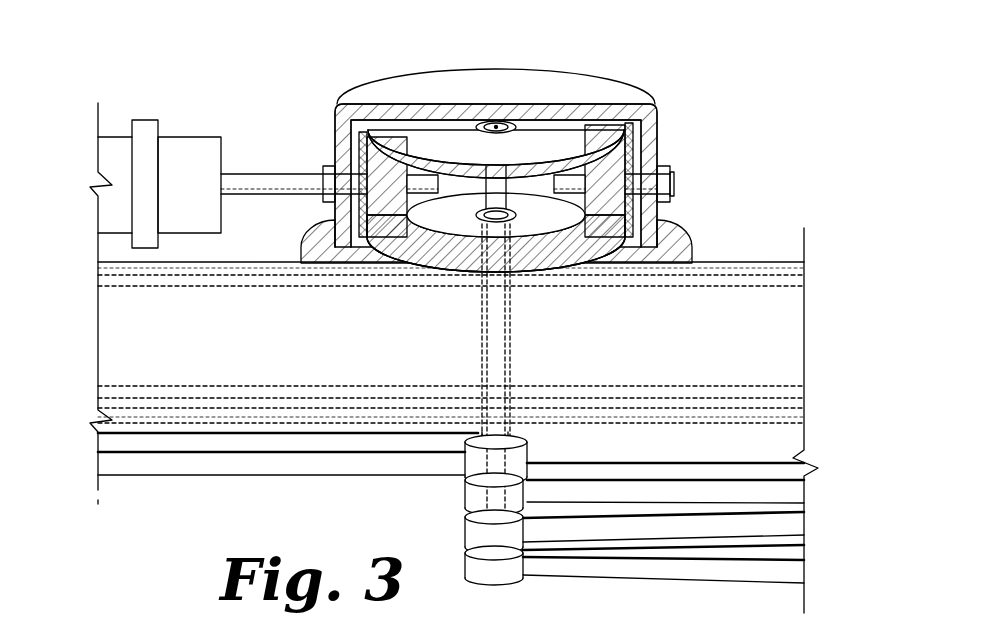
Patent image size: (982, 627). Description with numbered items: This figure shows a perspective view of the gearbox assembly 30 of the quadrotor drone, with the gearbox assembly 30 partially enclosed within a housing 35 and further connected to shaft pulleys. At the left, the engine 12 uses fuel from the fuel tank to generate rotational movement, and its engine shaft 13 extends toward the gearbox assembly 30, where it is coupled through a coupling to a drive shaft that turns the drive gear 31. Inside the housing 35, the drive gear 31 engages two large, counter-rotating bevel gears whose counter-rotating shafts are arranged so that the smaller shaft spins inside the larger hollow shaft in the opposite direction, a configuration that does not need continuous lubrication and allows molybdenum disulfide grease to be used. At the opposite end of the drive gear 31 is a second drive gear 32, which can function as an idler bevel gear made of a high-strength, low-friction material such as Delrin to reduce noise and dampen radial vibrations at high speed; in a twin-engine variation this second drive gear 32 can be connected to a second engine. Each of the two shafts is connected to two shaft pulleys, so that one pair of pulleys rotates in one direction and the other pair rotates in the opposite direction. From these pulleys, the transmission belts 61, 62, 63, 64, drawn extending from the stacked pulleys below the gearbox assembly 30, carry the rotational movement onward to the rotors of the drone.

The engine 12 is at (193, 163).
The engine shaft 13 is at (258, 182).
The gearbox assembly 30 is at (561, 275).
The drive gear 31 is at (387, 175).
The second drive gear 32 is at (610, 170).
The housing 35 is at (565, 90).
The transmission belt 61 is at (782, 525).
The transmission belt 62 is at (782, 573).
The transmission belt 63 is at (782, 493).
The transmission belt 64 is at (142, 463).